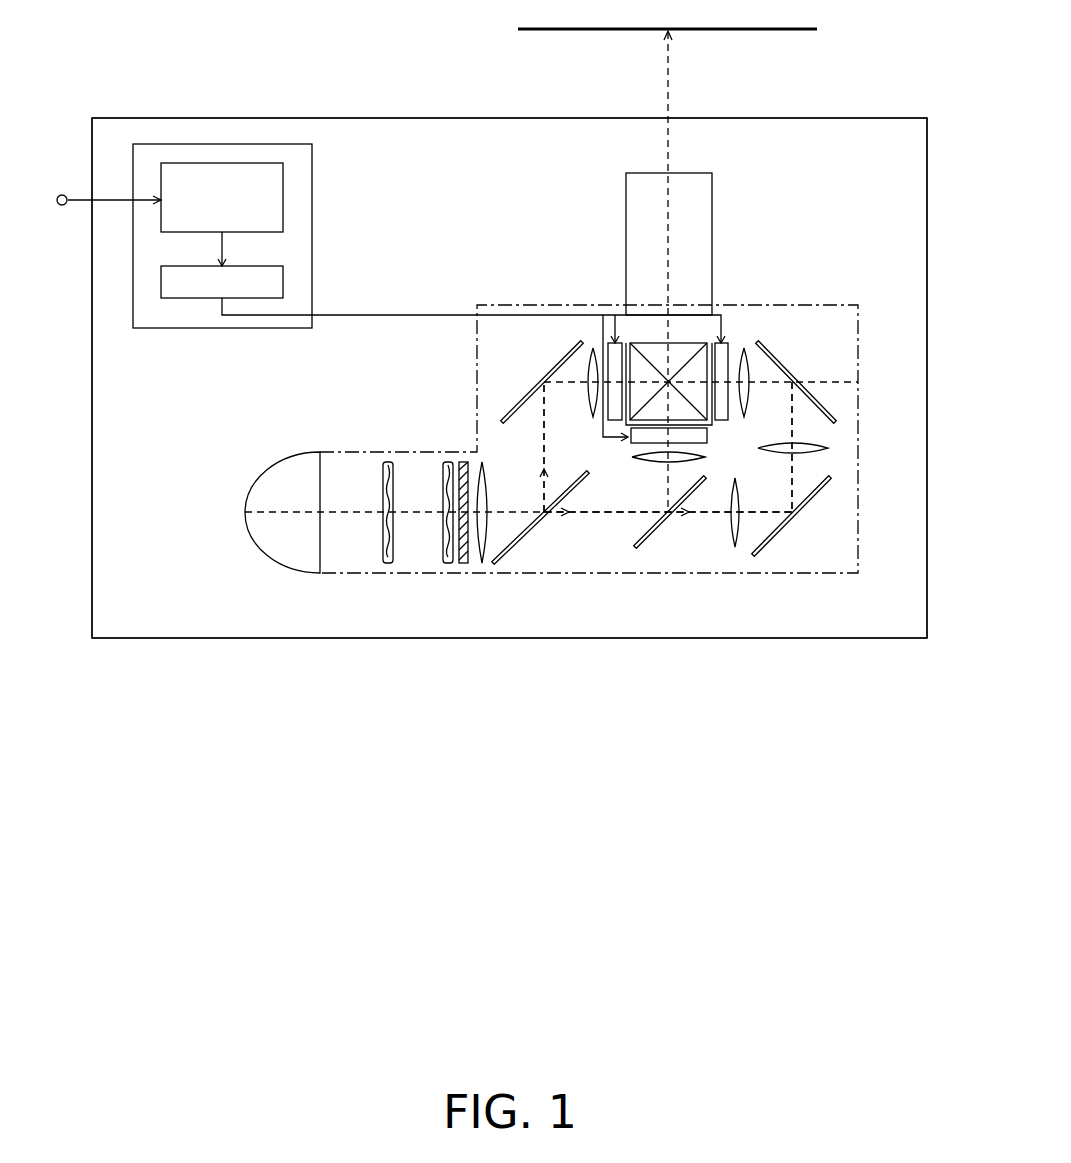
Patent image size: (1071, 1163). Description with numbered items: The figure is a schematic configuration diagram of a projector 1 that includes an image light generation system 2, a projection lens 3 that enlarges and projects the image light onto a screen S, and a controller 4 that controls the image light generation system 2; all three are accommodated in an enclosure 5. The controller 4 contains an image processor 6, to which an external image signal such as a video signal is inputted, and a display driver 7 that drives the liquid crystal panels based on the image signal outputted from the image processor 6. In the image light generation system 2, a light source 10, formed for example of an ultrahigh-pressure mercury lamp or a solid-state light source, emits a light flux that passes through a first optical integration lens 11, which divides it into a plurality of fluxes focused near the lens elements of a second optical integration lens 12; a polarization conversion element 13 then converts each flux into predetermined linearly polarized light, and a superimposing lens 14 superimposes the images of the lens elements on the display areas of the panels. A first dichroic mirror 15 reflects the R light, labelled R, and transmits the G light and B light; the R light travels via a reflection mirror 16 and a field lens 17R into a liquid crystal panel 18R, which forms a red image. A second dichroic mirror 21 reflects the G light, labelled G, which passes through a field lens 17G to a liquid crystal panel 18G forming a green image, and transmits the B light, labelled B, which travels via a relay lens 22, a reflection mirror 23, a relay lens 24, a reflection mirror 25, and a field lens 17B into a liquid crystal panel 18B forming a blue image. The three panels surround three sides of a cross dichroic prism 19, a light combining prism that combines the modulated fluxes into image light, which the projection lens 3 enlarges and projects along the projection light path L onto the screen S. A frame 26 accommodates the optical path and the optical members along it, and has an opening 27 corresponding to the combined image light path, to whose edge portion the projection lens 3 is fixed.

The projector 1 is at (895, 97).
The image light generation system 2 is at (389, 496).
The projection lens 3 is at (738, 224).
The controller 4 is at (391, 223).
The enclosure 5 is at (370, 118).
The image processor 6 is at (241, 163).
The display driver 7 is at (185, 300).
The light source 10 is at (278, 560).
The first optical integration lens 11 is at (388, 566).
The second optical integration lens 12 is at (448, 566).
The polarization conversion element 13 is at (464, 462).
The superimposing lens 14 is at (486, 490).
The first dichroic mirror 15 is at (520, 548).
The reflection mirror 16 is at (517, 408).
The field lens 17R is at (588, 365).
The field lens 17G is at (700, 455).
The field lens 17B is at (750, 370).
The liquid crystal panel 18R is at (615, 425).
The liquid crystal panel 18G is at (710, 437).
The liquid crystal panel 18B is at (727, 345).
The cross dichroic prism 19 is at (690, 343).
The second dichroic mirror 21 is at (645, 550).
The relay lens 22 is at (735, 550).
The reflection mirror 23 is at (820, 490).
The relay lens 24 is at (828, 448).
The reflection mirror 25 is at (830, 385).
The frame 26 is at (477, 305).
The opening 27 is at (626, 305).
The screen S is at (780, 30).
The projection light axis L is at (665, 215).
The R light R is at (553, 415).
The G light G is at (652, 487).
The B light B is at (765, 385).